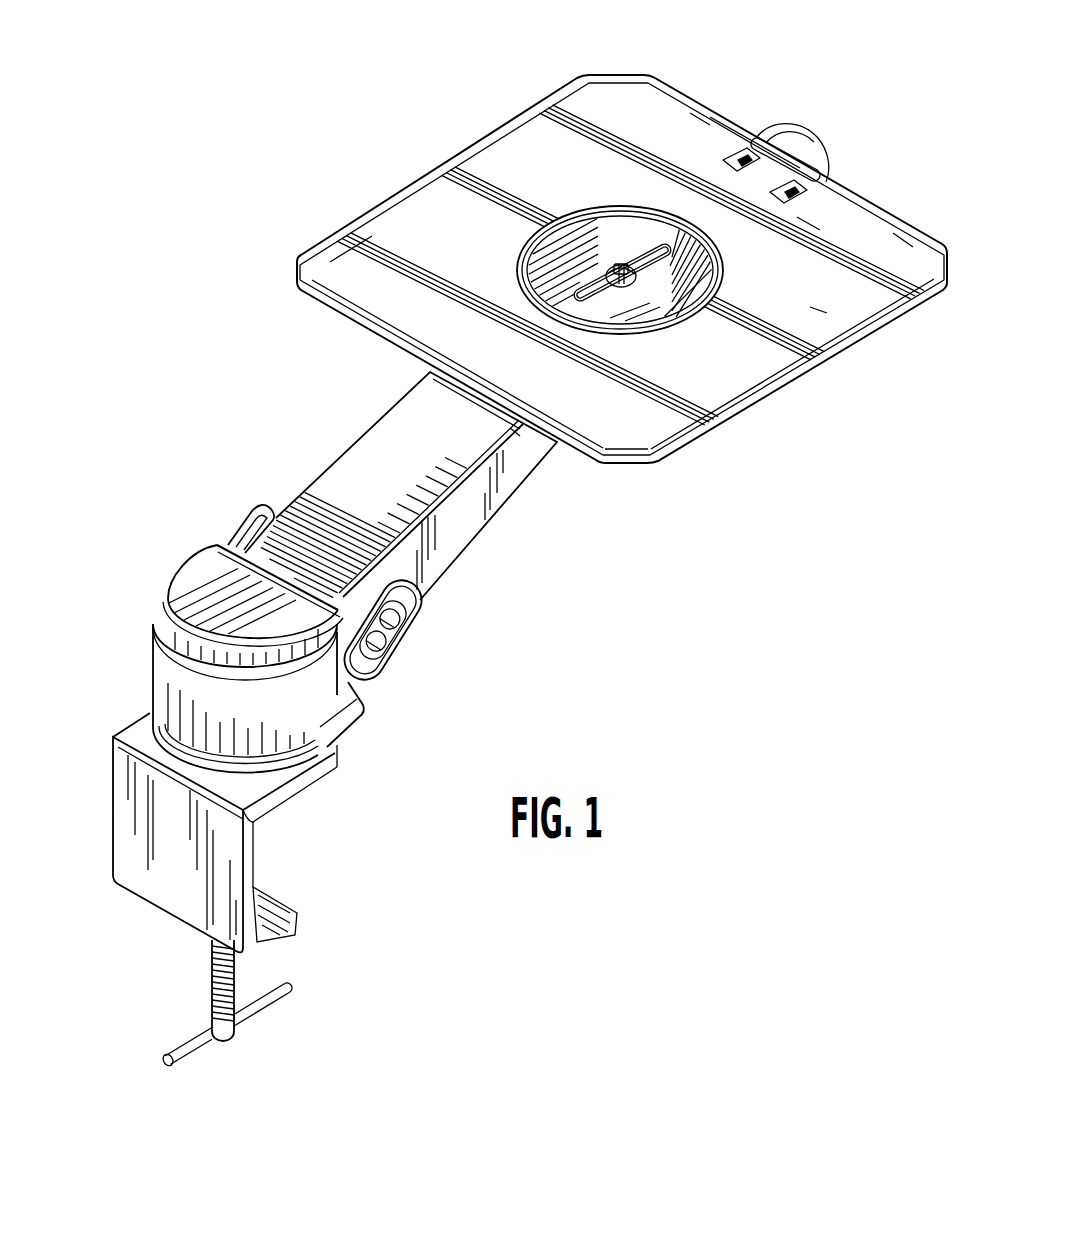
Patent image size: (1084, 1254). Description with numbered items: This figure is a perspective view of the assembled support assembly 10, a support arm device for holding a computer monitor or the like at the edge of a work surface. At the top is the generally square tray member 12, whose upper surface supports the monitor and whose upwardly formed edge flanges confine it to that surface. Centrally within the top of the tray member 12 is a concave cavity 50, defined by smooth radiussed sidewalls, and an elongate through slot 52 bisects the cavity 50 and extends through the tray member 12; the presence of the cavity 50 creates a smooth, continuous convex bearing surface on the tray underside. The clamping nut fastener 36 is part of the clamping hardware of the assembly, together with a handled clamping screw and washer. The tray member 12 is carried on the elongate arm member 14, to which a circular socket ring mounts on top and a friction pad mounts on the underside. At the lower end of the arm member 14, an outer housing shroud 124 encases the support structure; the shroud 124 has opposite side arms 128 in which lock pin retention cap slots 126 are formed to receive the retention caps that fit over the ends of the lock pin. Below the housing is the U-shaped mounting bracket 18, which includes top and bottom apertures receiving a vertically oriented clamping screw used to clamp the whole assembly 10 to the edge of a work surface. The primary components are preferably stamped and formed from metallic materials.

The support assembly 10 is at (600, 572).
The tray member 12 is at (747, 370).
The arm member 14 is at (360, 452).
The mounting bracket 18 is at (128, 828).
The clamping nut fastener 36 is at (624, 262).
The central concave cavity 50 is at (563, 262).
The elongate through slot 52 is at (597, 300).
The outer housing shroud 124 is at (157, 686).
The lock pin retention cap slots 126 is at (409, 632).
The side arms 128 is at (238, 524).